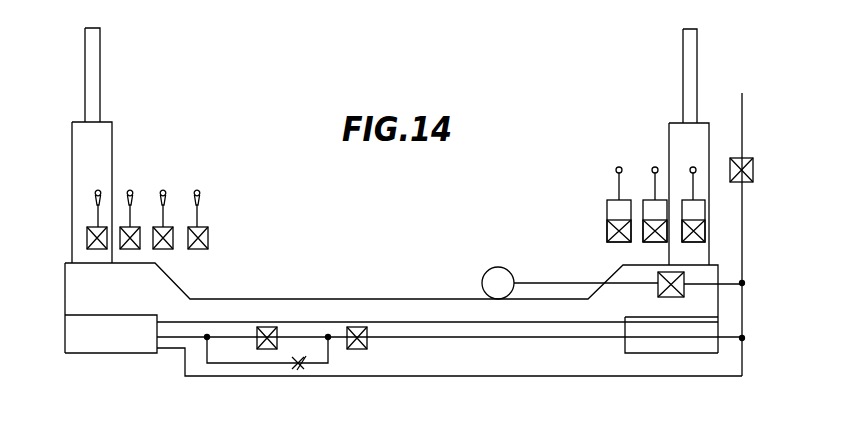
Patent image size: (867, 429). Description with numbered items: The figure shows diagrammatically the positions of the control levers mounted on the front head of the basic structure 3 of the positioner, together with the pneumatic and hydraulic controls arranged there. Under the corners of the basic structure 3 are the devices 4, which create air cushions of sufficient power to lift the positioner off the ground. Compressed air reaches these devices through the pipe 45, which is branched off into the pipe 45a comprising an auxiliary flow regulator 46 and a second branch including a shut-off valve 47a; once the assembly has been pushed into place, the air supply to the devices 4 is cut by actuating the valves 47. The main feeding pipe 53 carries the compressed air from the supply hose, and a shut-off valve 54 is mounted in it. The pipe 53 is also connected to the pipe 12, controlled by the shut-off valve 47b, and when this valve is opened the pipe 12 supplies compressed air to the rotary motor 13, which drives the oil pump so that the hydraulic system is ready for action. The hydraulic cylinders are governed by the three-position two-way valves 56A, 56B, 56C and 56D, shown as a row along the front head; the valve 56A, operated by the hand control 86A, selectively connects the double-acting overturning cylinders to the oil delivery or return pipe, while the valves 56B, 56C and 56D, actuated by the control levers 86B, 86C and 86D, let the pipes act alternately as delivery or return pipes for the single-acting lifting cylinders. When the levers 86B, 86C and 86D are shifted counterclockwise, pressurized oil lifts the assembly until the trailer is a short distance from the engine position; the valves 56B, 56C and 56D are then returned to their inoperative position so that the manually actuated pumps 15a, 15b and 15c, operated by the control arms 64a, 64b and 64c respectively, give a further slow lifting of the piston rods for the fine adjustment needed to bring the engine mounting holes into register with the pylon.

The basic structure 3 is at (445, 299).
The air cushion devices 4 is at (103, 342).
The pipe 12 is at (553, 283).
The rotary motor 13 is at (490, 272).
The manually actuated pump 15a is at (607, 232).
The manually actuated pump 15b is at (643, 240).
The manually actuated pump 15c is at (697, 242).
The pipe 45 is at (417, 338).
The pipe 45a is at (207, 353).
The auxiliary flow regulator 46 is at (298, 358).
The valves 47 is at (358, 328).
The shut-off valve 47a is at (268, 328).
The shut-off valve 47b is at (685, 288).
The main feeding pipe 53 is at (742, 233).
The shut-off valve 54 is at (749, 160).
The three-position two-way control valve 56A is at (207, 241).
The three-position two-way valve 56B is at (88, 240).
The three-position two-way valve 56C is at (126, 250).
The three-position two-way valve 56D is at (163, 251).
The control arm 64a is at (617, 184).
The control arm 64b is at (653, 178).
The control arm 64c is at (691, 177).
The hand control lever 86A is at (200, 193).
The control lever 86B is at (100, 193).
The control lever 86C is at (133, 193).
The control lever 86D is at (166, 193).